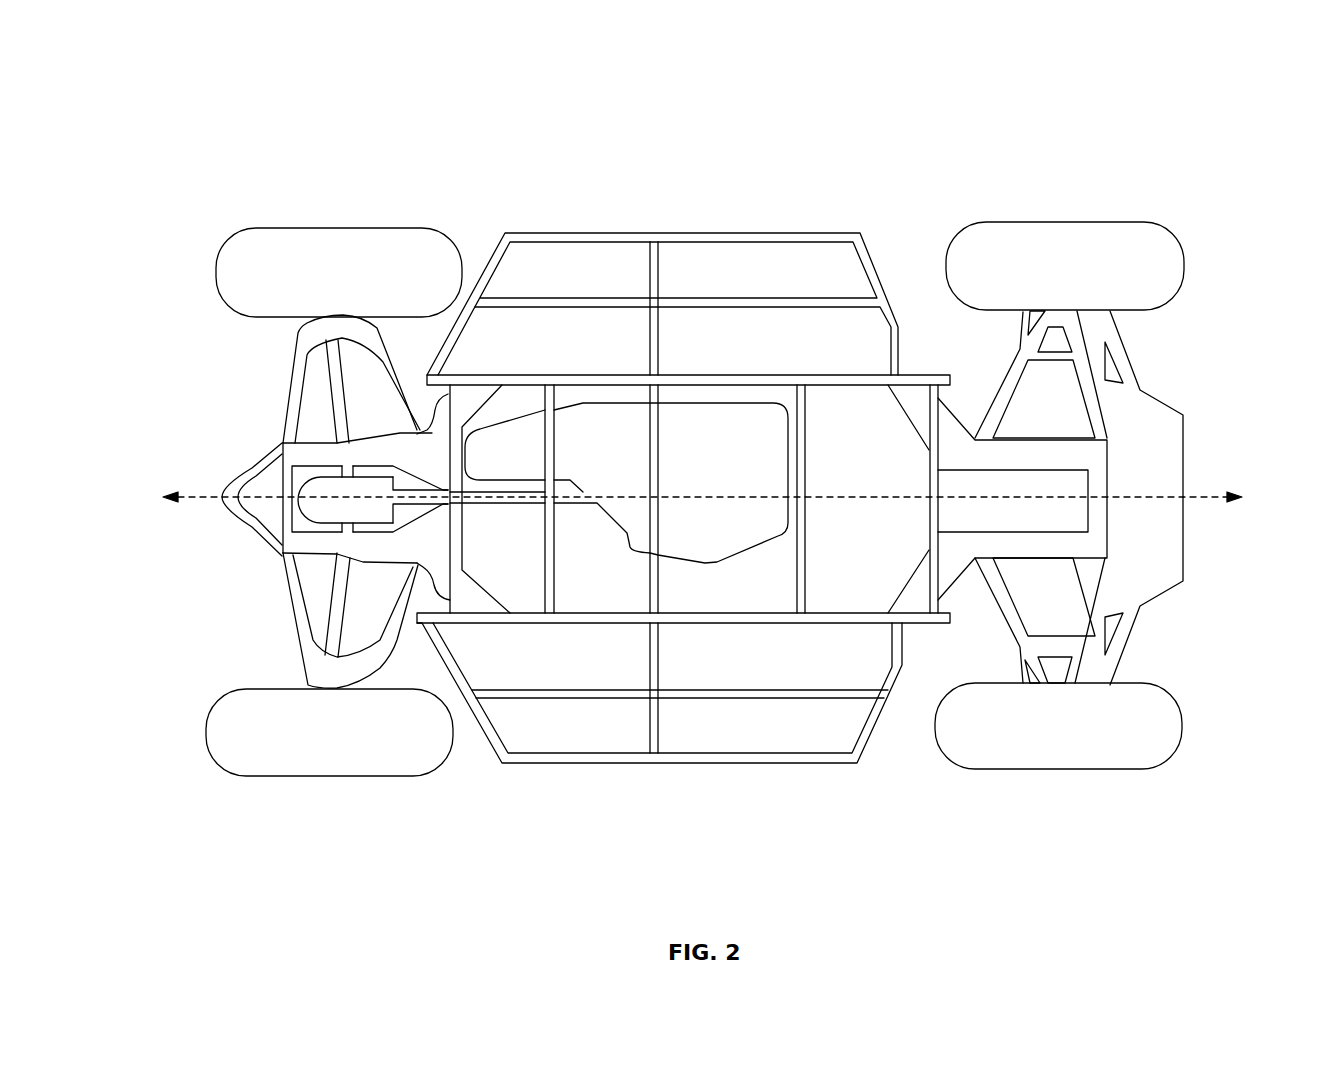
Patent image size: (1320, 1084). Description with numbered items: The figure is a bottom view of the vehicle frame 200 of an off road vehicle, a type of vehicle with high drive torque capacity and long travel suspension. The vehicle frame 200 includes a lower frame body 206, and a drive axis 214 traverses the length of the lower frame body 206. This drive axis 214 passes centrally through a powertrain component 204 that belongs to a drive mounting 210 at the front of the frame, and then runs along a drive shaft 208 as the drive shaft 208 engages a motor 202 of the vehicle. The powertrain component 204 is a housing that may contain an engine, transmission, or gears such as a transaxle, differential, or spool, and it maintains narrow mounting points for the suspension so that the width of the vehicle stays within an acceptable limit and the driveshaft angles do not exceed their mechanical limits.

The vehicle frame 200 is at (701, 443).
The motor 202 is at (730, 458).
The powertrain component 204 is at (323, 477).
The lower frame body 206 is at (598, 758).
The drive shaft 208 is at (497, 505).
The drive mounting 210 is at (270, 574).
The drive axis 214 is at (837, 498).